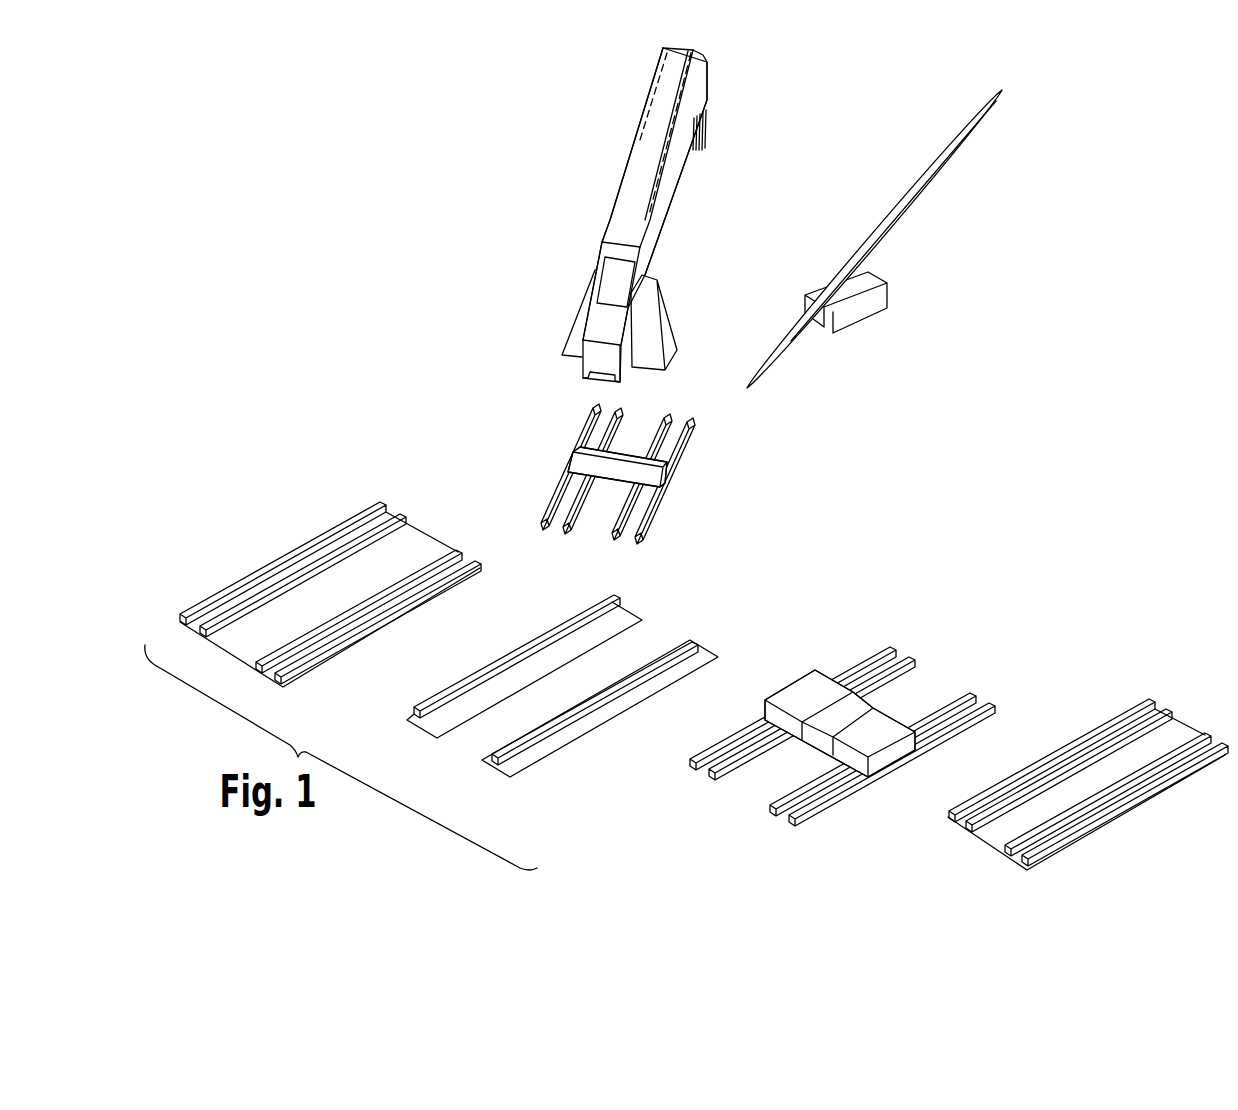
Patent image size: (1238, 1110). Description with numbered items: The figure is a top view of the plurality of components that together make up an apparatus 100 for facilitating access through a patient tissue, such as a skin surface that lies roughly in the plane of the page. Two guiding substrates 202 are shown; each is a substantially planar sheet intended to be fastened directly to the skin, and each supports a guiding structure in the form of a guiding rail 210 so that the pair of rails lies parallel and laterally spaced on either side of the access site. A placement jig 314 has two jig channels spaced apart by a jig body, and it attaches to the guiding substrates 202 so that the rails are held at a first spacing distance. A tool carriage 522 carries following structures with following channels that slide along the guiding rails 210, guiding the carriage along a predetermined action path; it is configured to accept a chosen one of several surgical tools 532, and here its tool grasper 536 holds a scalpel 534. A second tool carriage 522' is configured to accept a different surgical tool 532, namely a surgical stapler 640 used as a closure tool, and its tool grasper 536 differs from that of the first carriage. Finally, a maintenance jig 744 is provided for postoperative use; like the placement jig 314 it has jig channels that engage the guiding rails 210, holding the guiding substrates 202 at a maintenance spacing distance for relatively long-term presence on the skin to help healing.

The apparatus 100 is at (1110, 528).
The guiding substrate 202 is at (477, 703).
The guiding rail 210 is at (525, 743).
The placement jig 314 is at (267, 630).
The tool carriage 522 is at (842, 727).
The tool carriage 522' is at (600, 474).
The surgical tool 532 is at (750, 147).
The scalpel 534 is at (792, 338).
The tool grasper 536 is at (577, 328).
The surgical stapler 640 is at (628, 187).
The maintenance jig 744 is at (983, 842).